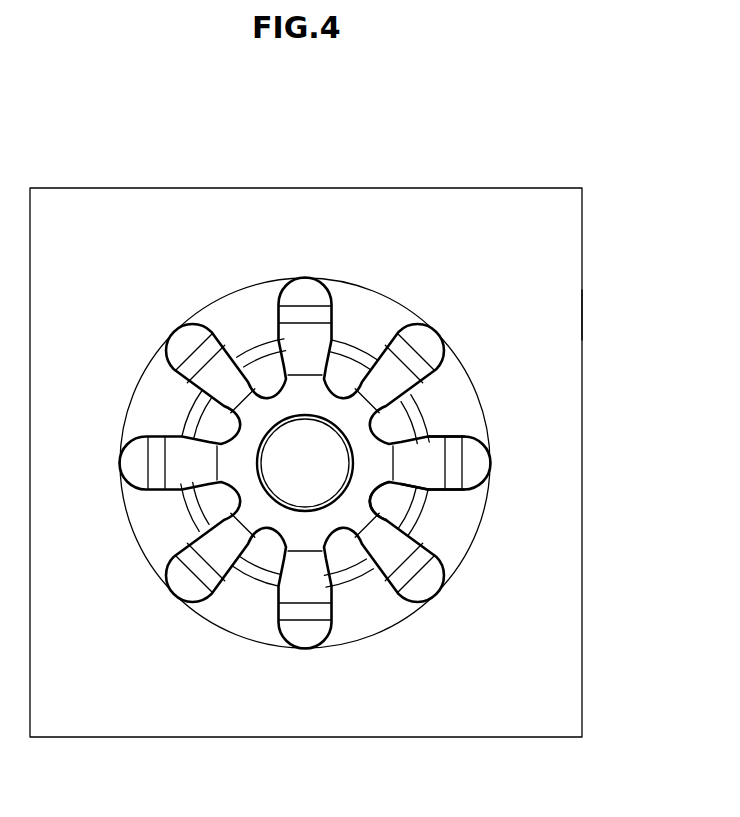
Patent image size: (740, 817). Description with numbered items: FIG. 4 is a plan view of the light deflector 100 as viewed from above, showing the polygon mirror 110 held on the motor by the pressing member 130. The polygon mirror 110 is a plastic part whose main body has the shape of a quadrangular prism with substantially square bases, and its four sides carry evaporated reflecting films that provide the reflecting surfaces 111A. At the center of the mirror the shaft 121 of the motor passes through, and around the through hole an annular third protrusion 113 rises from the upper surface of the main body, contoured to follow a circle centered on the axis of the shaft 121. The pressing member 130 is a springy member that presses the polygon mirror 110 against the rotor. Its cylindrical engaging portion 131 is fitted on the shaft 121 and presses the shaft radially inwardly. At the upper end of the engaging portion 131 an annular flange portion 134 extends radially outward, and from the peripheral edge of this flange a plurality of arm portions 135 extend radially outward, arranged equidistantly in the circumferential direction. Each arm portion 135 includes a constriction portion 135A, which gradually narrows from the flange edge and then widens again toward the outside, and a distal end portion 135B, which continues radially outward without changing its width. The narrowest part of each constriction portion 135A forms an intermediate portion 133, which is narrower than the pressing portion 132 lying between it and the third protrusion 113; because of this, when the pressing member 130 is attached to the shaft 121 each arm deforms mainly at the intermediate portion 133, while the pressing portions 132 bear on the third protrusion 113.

The motor 100 is at (500, 142).
The polygon mirror 110 is at (582, 238).
The reflecting surfaces 111A is at (583, 316).
The third protrusion 113 is at (247, 310).
The shaft 121 is at (283, 468).
The pressing member 130 is at (490, 462).
The engaging portion 131 is at (298, 418).
The pressing portions 132 is at (463, 470).
The intermediate portions 133 is at (430, 437).
The annular flange portion 134 is at (392, 517).
The arm portions 135 is at (440, 489).
The constriction portion 135A is at (410, 497).
The distal end portion 135B is at (455, 437).